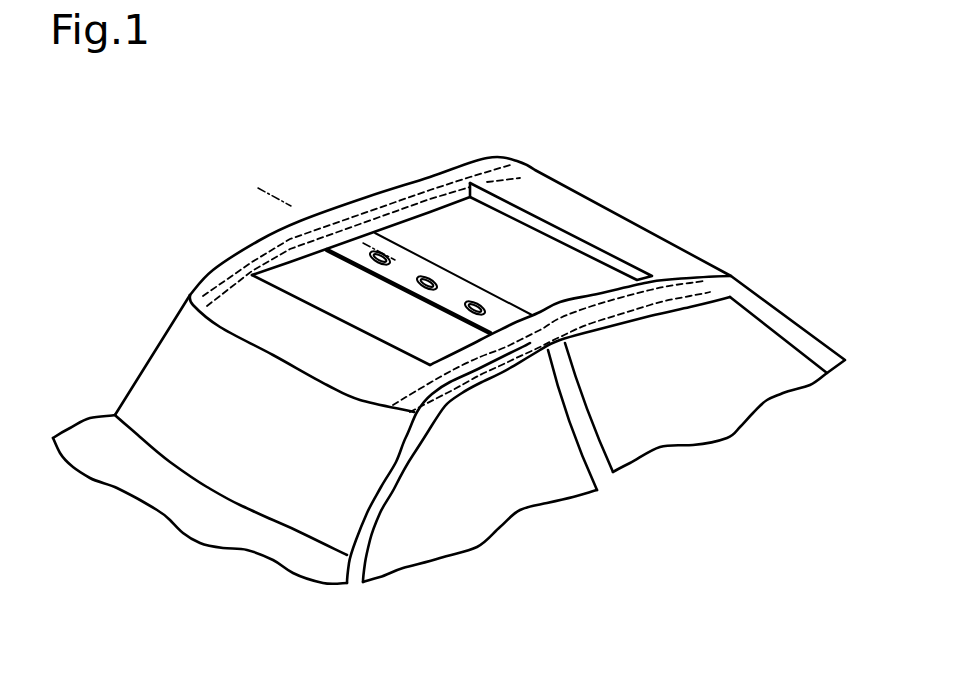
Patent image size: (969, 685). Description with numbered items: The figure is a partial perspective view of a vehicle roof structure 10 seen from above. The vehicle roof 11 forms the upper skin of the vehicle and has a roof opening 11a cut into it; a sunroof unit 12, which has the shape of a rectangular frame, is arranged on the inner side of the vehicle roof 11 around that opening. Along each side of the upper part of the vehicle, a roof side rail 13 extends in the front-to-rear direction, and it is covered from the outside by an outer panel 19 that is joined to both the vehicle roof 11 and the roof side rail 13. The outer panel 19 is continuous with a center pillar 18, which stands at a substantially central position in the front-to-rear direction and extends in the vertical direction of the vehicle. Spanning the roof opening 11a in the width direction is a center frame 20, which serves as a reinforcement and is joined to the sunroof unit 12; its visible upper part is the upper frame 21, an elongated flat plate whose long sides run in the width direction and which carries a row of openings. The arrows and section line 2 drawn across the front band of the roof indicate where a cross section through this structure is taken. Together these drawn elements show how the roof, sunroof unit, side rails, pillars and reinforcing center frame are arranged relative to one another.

The section line 2- 2 is at (258, 188).
The vehicle roof structure 10 is at (409, 176).
The vehicle roof 11 is at (343, 340).
The roof opening 11a is at (402, 344).
The sunroof unit 12 is at (553, 222).
The roof side rail 13 is at (355, 213).
The center pillar 18 is at (590, 408).
The outer panel 19 is at (592, 330).
The center frame 20 is at (507, 297).
The upper frame 21 is at (467, 287).